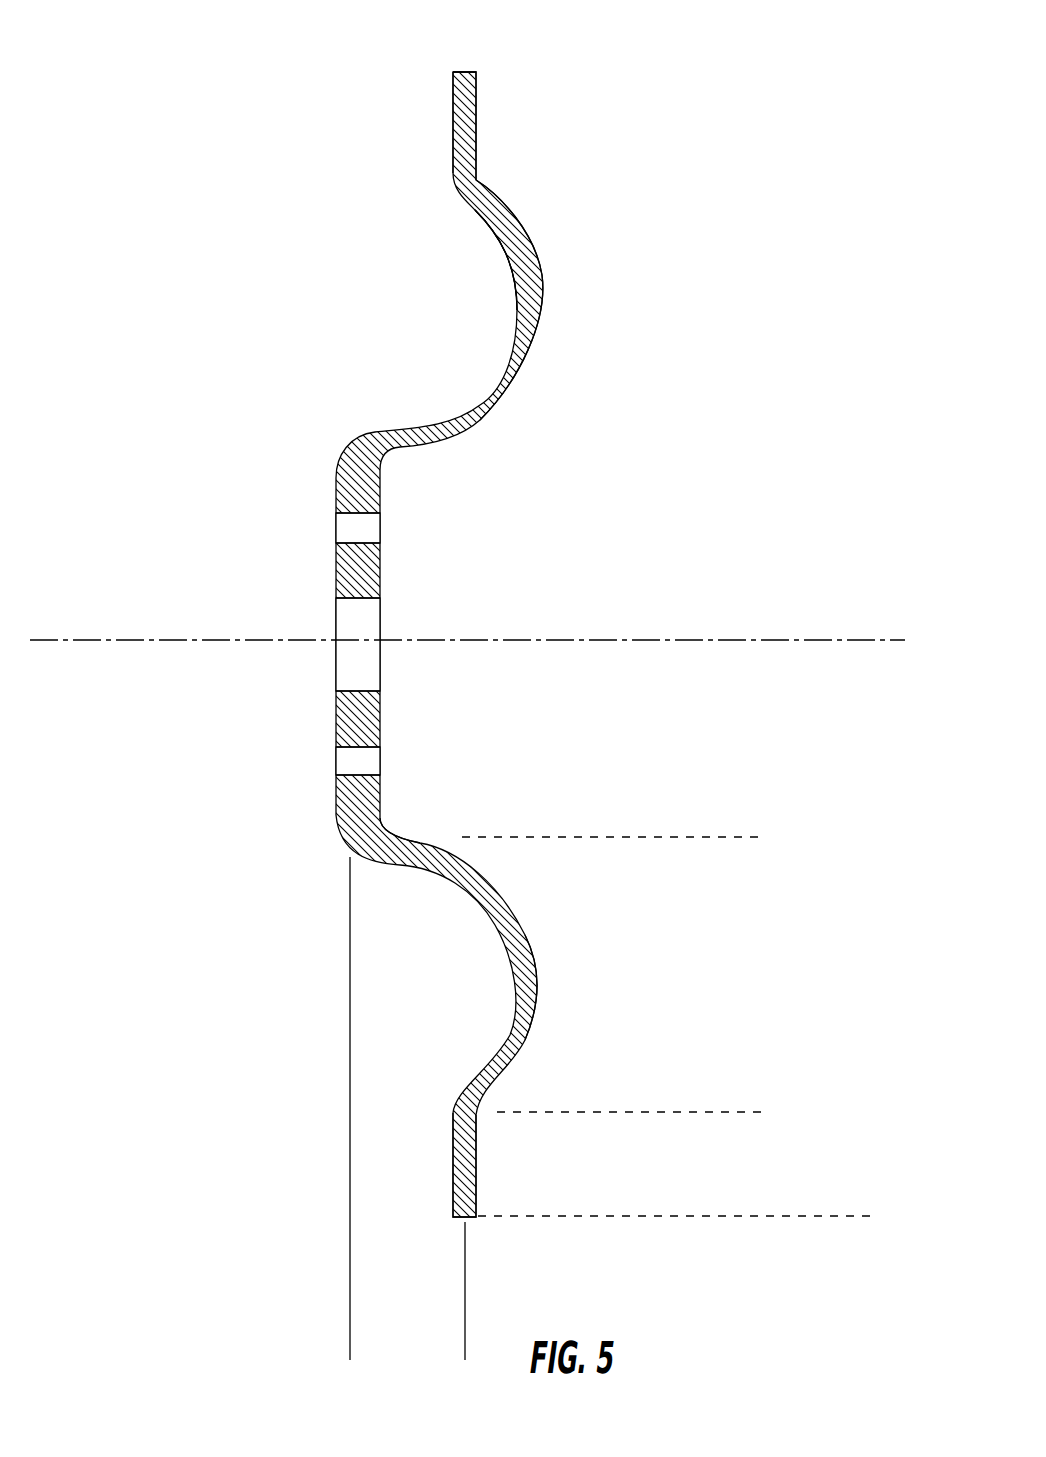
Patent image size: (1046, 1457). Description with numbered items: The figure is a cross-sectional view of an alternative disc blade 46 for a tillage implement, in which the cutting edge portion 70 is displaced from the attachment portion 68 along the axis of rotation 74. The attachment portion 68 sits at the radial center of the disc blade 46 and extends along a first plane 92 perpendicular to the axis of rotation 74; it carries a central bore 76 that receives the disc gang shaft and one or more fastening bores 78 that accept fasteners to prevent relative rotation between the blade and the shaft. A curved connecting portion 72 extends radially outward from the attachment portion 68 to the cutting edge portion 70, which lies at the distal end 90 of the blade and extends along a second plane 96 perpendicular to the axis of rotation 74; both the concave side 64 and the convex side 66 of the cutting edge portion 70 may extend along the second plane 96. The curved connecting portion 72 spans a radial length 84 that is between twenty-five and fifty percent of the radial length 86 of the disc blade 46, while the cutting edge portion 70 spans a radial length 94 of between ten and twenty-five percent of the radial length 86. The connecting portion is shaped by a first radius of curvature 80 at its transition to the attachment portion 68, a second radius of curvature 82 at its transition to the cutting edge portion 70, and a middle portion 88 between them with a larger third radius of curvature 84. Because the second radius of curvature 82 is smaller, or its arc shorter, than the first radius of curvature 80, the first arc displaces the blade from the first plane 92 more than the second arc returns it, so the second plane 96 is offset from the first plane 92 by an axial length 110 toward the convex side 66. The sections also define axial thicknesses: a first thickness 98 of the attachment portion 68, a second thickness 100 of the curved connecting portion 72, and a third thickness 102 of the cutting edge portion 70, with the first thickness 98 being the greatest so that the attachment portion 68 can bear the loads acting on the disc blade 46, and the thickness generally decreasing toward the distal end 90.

The disc blade 46 is at (317, 608).
The concave side 64 is at (49, 503).
The convex side 66 is at (899, 455).
The attachment portion 68 is at (331, 644).
The cutting edge portion 70 is at (433, 126).
The curved connecting portion 72 is at (473, 260).
The axis of rotation 74 is at (467, 616).
The central bore 76 is at (413, 640).
The fastening bore 78 is at (392, 503).
The first radius of curvature 80 is at (430, 792).
The second radius of curvature 82 is at (524, 180).
The radial length of curved connecting portion 84 is at (521, 660).
The radial length of disc blade 86 is at (666, 928).
The middle portion 88 is at (526, 338).
The distal end 90 is at (482, 58).
The first plane 92 is at (334, 1108).
The radial length of cutting edge portion 94 is at (631, 1163).
The second plane 96 is at (479, 1291).
The first thickness 98 is at (369, 726).
The second thickness 100 is at (542, 987).
The third thickness 102 is at (482, 1165).
The axial length 110 is at (407, 1287).